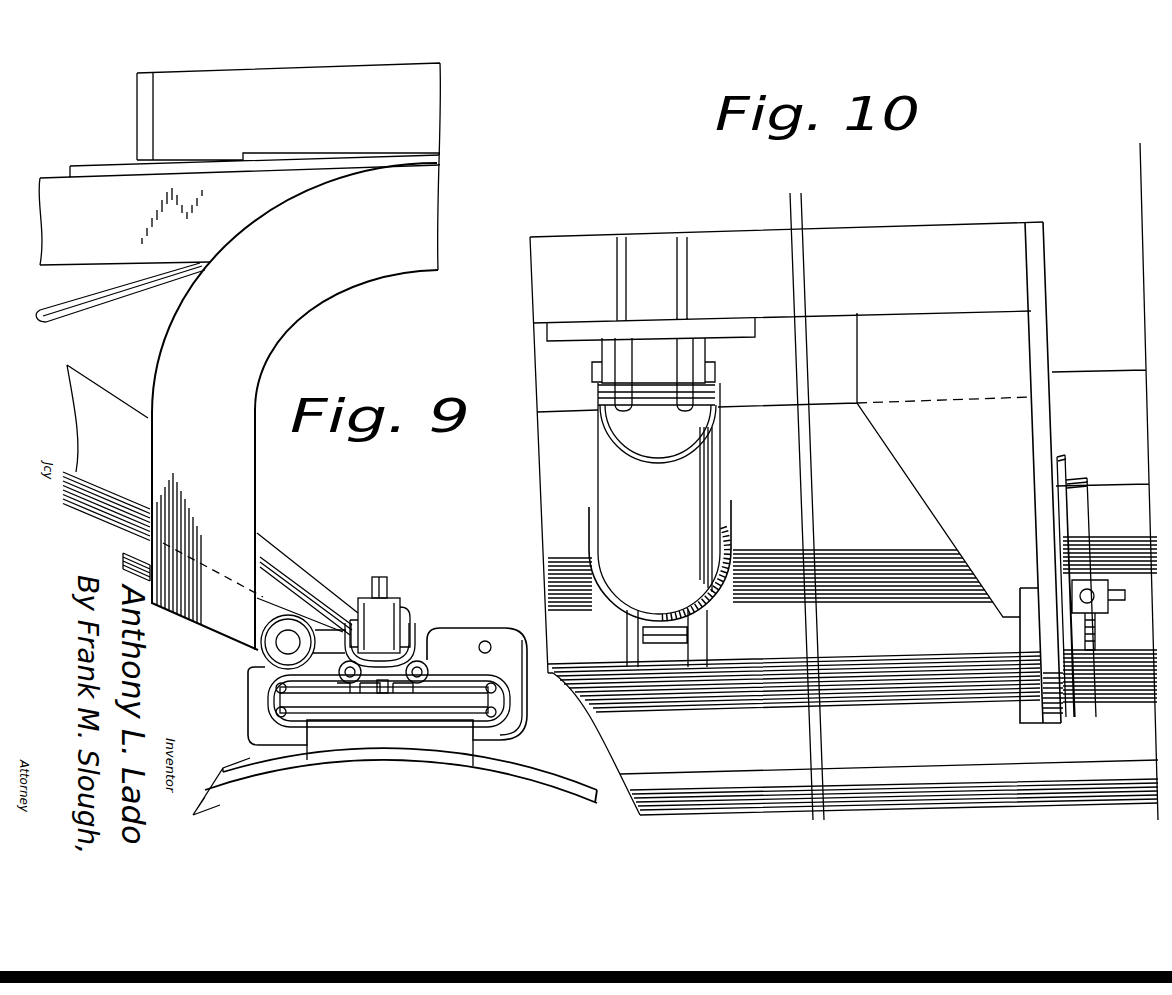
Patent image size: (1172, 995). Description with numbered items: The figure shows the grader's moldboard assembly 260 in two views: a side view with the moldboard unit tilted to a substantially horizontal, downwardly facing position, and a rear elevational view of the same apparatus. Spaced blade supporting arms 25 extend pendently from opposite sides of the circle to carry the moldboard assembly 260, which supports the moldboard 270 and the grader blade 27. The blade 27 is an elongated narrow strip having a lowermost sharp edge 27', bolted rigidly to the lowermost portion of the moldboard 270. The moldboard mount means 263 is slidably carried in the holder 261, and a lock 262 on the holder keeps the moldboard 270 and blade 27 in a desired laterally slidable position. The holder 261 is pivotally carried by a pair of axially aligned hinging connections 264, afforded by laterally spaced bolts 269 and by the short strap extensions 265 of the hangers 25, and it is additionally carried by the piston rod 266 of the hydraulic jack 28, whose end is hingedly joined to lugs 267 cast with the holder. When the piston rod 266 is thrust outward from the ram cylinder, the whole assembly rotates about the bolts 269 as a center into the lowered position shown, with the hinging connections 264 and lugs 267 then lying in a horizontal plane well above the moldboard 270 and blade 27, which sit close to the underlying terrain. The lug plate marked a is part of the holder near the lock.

In FIG. 9, the blade supporting arm 25 is at (250, 358).
In FIG. 10, the blade supporting arm 25 is at (1043, 435).
In FIG. 9, the grader blade 27 is at (234, 786).
In FIG. 10, the grader blade 27 is at (889, 750).
In FIG. 10, the sharp edge 27' is at (894, 773).
In FIG. 9, the hydraulic jack 28 is at (95, 397).
In FIG. 10, the hydraulic jack 28 is at (687, 465).
In FIG. 9, the moldboard assembly 260 is at (427, 608).
In FIG. 9, the holder 261 is at (257, 698).
In FIG. 9, the lock 262 is at (420, 632).
In FIG. 9, the moldboard mount means 263 is at (470, 700).
In FIG. 9, the hinging connection 264 is at (290, 640).
In FIG. 9, the strap extension 265 is at (268, 620).
In FIG. 9, the piston rod 266 is at (280, 560).
In FIG. 10, the lug 267 is at (597, 718).
In FIG. 9, the bolt 269 is at (263, 657).
In FIG. 9, the moldboard 270 is at (402, 753).
In FIG. 9, the lug plate a is at (508, 644).